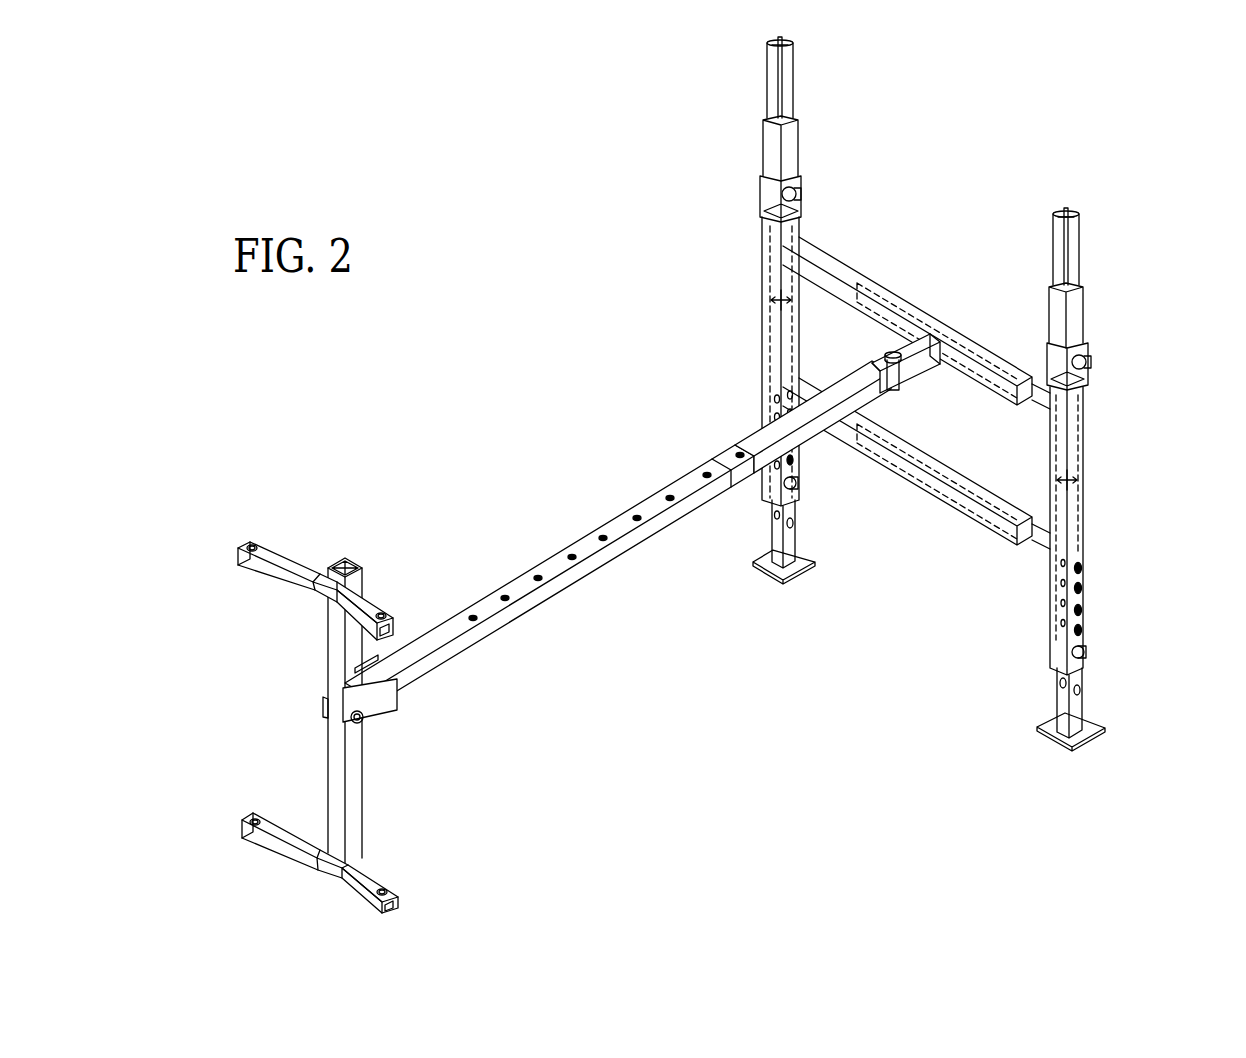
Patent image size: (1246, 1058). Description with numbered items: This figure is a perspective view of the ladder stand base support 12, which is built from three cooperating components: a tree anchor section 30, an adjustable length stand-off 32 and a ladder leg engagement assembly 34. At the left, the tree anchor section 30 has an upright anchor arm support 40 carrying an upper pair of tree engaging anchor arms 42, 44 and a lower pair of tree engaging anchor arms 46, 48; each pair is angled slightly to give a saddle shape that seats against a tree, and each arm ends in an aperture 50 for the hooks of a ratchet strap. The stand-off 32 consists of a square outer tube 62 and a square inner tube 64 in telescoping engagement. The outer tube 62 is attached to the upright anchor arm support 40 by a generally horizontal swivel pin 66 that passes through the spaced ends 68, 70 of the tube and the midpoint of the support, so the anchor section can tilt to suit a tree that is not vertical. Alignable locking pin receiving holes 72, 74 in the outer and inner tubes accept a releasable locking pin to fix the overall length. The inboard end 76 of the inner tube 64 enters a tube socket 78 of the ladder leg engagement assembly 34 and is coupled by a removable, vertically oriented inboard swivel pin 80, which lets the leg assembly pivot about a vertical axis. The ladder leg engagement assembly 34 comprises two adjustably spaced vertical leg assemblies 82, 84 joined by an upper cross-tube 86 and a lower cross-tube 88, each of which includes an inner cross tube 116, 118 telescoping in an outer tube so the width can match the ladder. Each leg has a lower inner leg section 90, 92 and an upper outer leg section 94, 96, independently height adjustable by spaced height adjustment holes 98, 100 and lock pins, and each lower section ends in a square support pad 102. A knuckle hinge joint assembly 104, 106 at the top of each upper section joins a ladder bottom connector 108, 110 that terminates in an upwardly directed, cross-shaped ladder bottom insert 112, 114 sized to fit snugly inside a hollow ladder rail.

The ladder stand base support 12 is at (527, 390).
The tree anchor section 30 is at (296, 688).
The adjustable length stand-off 32 is at (538, 536).
The ladder leg engagement assembly 34 is at (930, 288).
The upright anchor arm support 40 is at (352, 790).
The tree engaging anchor arm 42 is at (366, 603).
The tree engaging anchor arm 44 is at (295, 557).
The tree engaging anchor arm 46 is at (368, 877).
The tree engaging anchor arm 48 is at (285, 832).
The aperture 50 is at (251, 545).
The outer tube 62 is at (590, 540).
The inner tube 64 is at (753, 448).
The swivel pin 66 is at (366, 720).
The spaced end of the outer tube 68 is at (388, 710).
The spaced end of the outer tube 70 is at (372, 670).
The locking pin receiving holes 72 is at (505, 596).
The locking pin receiving holes 74 is at (748, 460).
The inboard end of the inner tube 76 is at (845, 374).
The tube socket 78 is at (908, 362).
The inboard swivel pin 80 is at (893, 373).
The vertical leg assembly 82 is at (1106, 480).
The vertical leg assembly 84 is at (752, 280).
The upper cross-tube 86 is at (855, 255).
The lower cross-tube 88 is at (945, 518).
The lower inner leg section 90 is at (1079, 679).
The lower inner leg section 92 is at (795, 540).
The upper outer leg section 94 is at (1076, 441).
The upper outer leg section 96 is at (777, 303).
The height adjustment holes 98 is at (793, 523).
The height adjustment holes 100 is at (775, 397).
The support pad 102 is at (779, 569).
The knuckle hinge joint assembly 104 is at (1106, 373).
The knuckle hinge joint assembly 106 is at (752, 206).
The ladder bottom connector 108 is at (1076, 312).
The ladder bottom connector 110 is at (800, 146).
The ladder bottom insert 112 is at (1072, 231).
The ladder bottom insert 114 is at (800, 69).
The inner cross tube 116 is at (1032, 395).
The inner cross tube 118 is at (1037, 548).